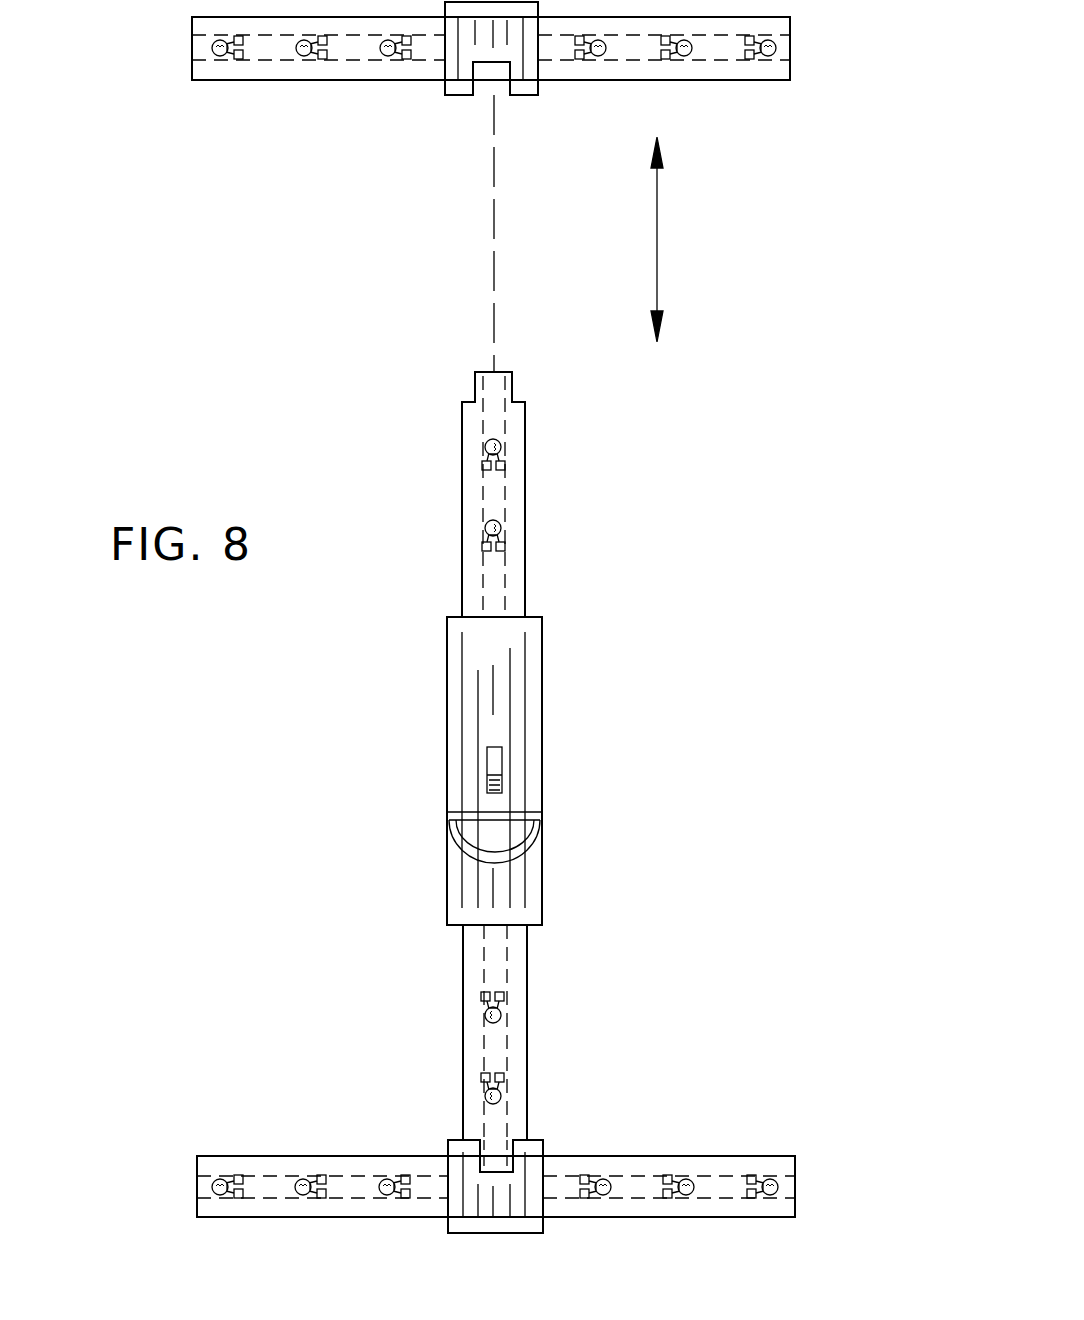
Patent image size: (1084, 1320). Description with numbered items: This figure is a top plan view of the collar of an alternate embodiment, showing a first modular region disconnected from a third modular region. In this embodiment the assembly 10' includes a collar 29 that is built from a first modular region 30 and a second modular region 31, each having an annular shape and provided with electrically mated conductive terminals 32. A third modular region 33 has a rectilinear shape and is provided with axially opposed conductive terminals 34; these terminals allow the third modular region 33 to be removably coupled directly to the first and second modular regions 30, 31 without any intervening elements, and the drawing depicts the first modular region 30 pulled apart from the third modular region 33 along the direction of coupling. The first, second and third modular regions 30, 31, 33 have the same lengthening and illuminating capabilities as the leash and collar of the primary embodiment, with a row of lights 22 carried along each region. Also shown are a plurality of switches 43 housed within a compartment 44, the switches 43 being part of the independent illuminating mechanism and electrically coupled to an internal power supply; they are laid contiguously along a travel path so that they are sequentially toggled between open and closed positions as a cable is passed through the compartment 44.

The assembly 10' is at (721, 233).
The light bulbs 22 is at (218, 52).
The collar 29 is at (518, 970).
The first modular region 30 is at (723, 68).
The second modular region 31 is at (710, 1163).
The conductive terminals 32 is at (528, 80).
The third modular region 33 is at (518, 577).
The conductive terminals 34 is at (498, 385).
The switches 43 is at (498, 760).
The compartment 44 is at (542, 733).